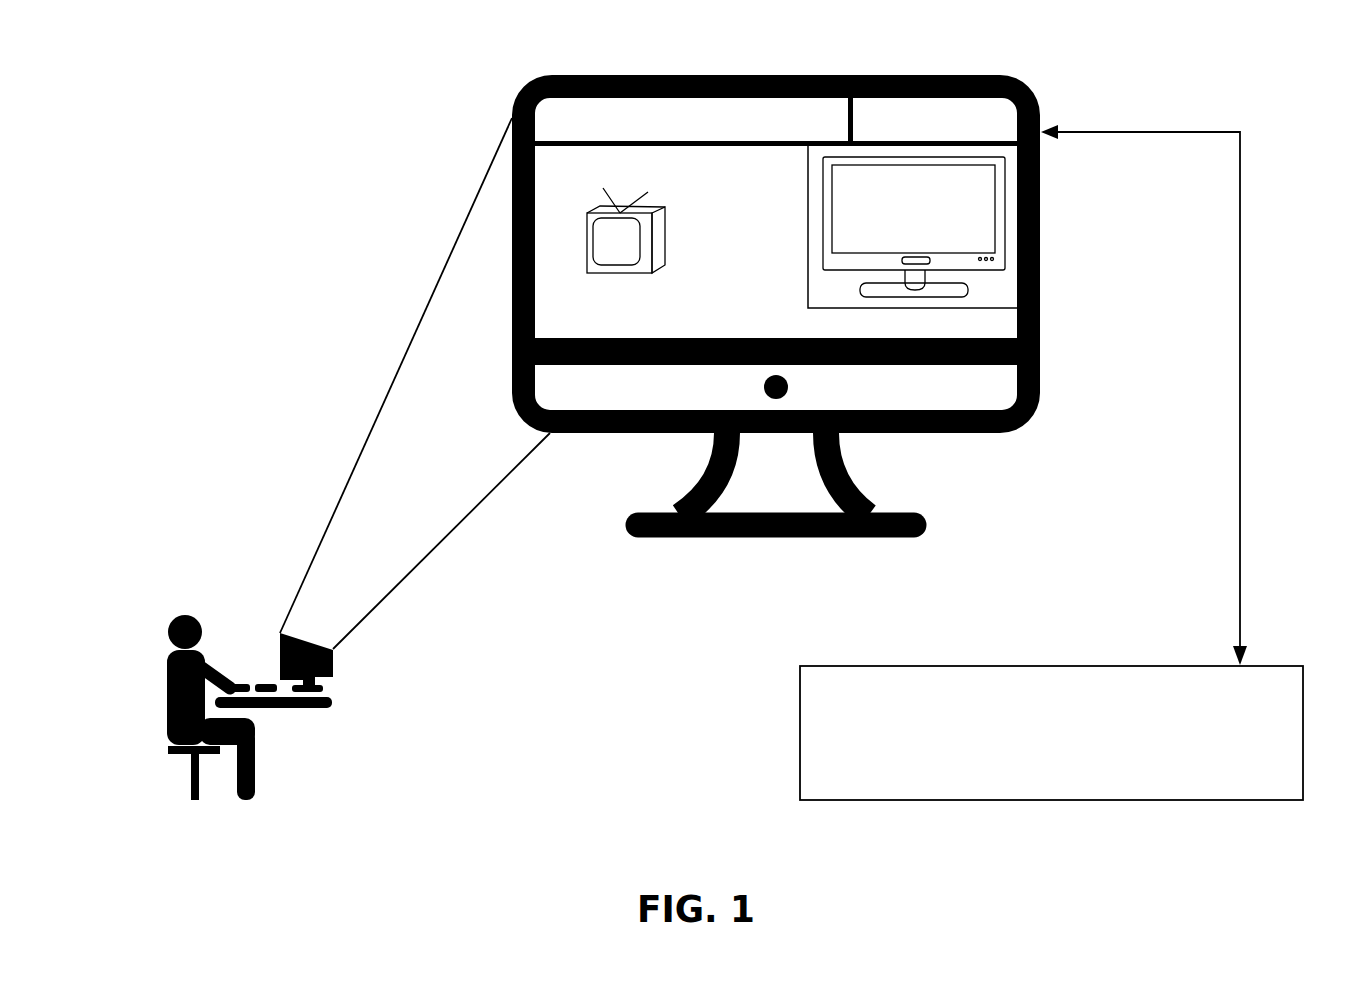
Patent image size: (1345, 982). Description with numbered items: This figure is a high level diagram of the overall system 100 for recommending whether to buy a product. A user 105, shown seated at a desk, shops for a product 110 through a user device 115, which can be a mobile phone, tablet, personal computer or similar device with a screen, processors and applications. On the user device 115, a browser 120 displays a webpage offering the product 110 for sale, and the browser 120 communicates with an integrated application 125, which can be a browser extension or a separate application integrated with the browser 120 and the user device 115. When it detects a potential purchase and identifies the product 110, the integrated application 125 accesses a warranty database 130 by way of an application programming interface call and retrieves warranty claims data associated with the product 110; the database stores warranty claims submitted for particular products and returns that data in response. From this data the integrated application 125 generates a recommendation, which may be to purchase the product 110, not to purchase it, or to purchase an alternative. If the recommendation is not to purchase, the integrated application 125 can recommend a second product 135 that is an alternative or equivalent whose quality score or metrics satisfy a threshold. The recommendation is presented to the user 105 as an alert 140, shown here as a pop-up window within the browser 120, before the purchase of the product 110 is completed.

The system 100 is at (288, 112).
The user 105 is at (184, 615).
The product 110 is at (603, 270).
The user device 115 is at (687, 76).
The browser 120 is at (787, 106).
The integrated application 125 is at (993, 113).
The warranty database 130 is at (1200, 664).
The second product 135 is at (1000, 232).
The alert 140 is at (993, 307).